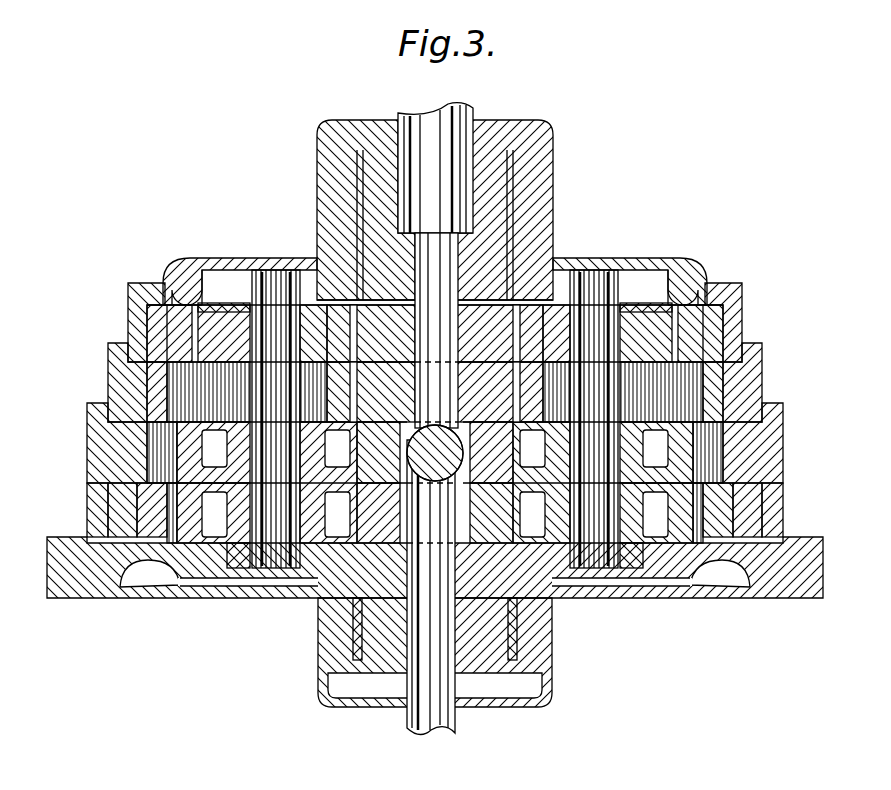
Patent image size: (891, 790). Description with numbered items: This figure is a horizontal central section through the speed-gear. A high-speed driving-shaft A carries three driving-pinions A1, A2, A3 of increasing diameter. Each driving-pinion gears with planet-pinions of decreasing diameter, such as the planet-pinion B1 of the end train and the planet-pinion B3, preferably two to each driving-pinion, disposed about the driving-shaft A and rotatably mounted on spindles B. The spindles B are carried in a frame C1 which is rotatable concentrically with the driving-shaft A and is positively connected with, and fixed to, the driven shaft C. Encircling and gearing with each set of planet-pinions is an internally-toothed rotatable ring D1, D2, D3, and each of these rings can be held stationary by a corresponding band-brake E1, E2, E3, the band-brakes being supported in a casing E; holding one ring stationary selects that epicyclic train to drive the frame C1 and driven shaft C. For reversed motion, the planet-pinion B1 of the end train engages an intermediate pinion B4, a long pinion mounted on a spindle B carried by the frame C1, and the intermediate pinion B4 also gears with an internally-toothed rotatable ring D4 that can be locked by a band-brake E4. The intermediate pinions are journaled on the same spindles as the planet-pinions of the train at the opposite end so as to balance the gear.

The driving-shaft A is at (420, 675).
The driving-pinion A1 is at (395, 420).
The driving-pinion A2 is at (431, 440).
The driving-pinion A3 is at (403, 330).
The spindle B is at (270, 300).
The planet-pinion B1 is at (480, 462).
The planet-pinion B3 is at (640, 335).
The intermediate pinion B4 is at (707, 640).
The driven shaft C is at (428, 192).
The frame C1 is at (232, 310).
The internally-toothed rotatable ring D1 is at (795, 413).
The internally-toothed rotatable ring D2 is at (783, 340).
The internally-toothed rotatable ring D3 is at (723, 252).
The internally-toothed rotatable ring D4 is at (793, 490).
The casing E is at (105, 493).
The band-brake E1 is at (793, 453).
The band-brake E2 is at (780, 377).
The band-brake E3 is at (770, 300).
The band-brake E4 is at (817, 517).